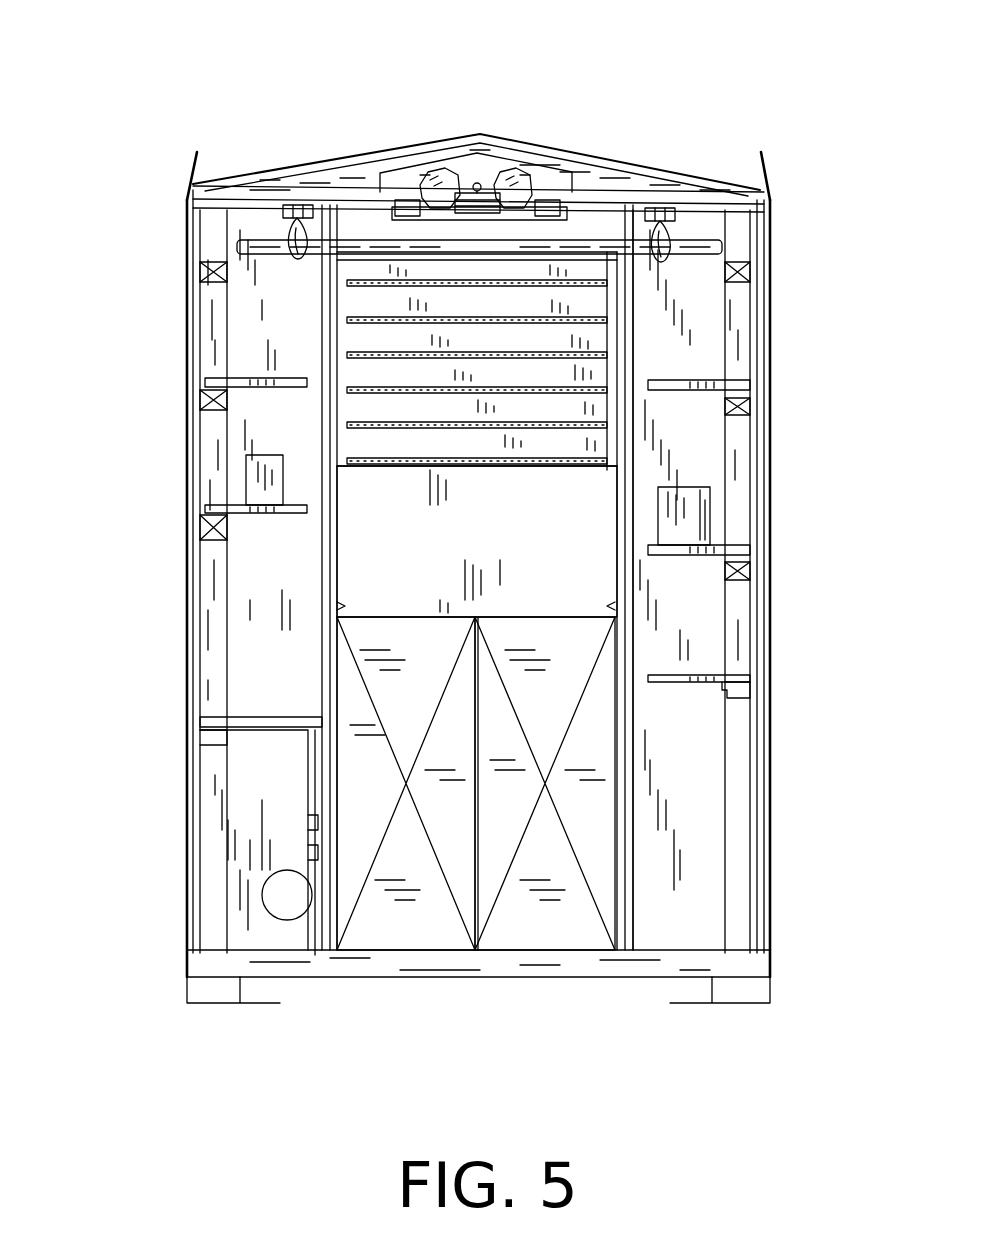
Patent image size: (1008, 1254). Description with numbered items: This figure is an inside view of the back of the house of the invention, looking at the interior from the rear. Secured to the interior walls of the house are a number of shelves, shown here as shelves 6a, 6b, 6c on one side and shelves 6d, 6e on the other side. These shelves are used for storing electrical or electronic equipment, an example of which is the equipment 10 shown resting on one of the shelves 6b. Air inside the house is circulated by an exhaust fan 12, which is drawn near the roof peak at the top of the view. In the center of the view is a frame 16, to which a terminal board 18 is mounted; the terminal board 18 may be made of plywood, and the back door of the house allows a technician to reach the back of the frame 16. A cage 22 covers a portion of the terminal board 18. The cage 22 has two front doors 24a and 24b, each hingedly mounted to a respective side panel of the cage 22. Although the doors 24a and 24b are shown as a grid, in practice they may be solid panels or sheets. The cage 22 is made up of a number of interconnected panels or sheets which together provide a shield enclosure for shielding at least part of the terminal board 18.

The exhaust fan 12 is at (428, 185).
The frame 16 is at (583, 275).
The terminal board 18 is at (350, 570).
The front door 24a is at (375, 928).
The front door 24b is at (560, 928).
The shelf 6a is at (695, 382).
The shelf 6b is at (700, 556).
The shelf 6c is at (697, 684).
The shelf 6d is at (252, 390).
The shelf 6e is at (258, 513).
The electrical or electronic equipment 10 is at (703, 510).
The cage 22 is at (627, 827).